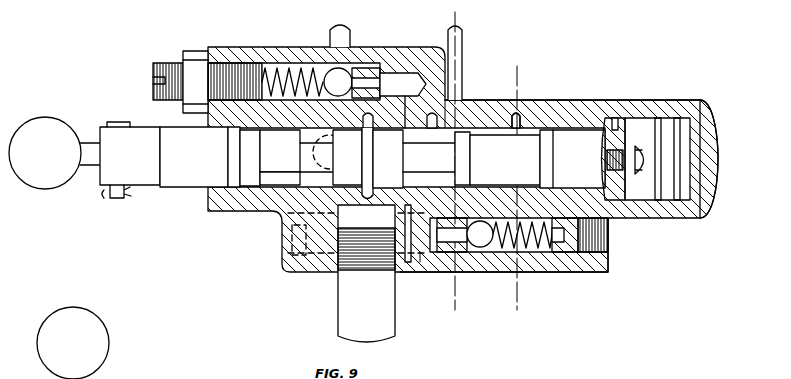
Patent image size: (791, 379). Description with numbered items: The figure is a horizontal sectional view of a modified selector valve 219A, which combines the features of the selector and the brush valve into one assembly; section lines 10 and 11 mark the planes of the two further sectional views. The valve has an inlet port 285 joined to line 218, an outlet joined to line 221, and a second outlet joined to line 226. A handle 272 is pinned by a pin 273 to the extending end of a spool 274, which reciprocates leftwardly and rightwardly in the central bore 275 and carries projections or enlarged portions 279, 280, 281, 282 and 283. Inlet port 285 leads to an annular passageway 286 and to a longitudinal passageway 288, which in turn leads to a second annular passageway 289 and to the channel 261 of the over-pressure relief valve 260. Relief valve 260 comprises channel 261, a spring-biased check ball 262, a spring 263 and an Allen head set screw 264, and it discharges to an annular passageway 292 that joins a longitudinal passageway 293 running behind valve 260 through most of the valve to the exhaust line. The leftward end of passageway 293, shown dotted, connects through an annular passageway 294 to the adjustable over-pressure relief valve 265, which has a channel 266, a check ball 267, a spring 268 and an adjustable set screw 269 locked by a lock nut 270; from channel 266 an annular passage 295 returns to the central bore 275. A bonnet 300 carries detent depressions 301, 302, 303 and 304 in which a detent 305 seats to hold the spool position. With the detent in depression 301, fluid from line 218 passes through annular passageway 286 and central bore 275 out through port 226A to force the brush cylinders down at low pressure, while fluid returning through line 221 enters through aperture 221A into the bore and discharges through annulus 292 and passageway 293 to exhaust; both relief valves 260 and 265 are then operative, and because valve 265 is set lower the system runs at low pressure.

The section line 10 is at (436, 300).
The section line 11 is at (497, 300).
The line 218 is at (338, 318).
The selector valve 219A is at (684, 98).
The line 221 is at (463, 40).
The aperture 221A is at (474, 127).
The line 226 is at (350, 38).
The port 226A is at (277, 214).
The over-pressure relief valve 260 is at (598, 272).
The channel 261 is at (442, 252).
The check ball 262 is at (480, 248).
The spring 263 is at (545, 253).
The Allen head set screw 264 is at (609, 240).
The adjustable over-pressure relief valve 265 is at (246, 62).
The channel 266 is at (372, 66).
The check ball 267 is at (331, 69).
The spring 268 is at (298, 67).
The adjustable set screw 269 is at (170, 62).
The lock nut 270 is at (198, 50).
The handle 272 is at (43, 192).
The pin 273 is at (117, 200).
The spool 274 is at (175, 190).
The bore 275 is at (300, 140).
The enlarged portion 279 is at (243, 153).
The enlarged portion 280 is at (337, 150).
The enlarged portion 281 is at (398, 162).
The enlarged portion 282 is at (463, 150).
The enlarged portion 283 is at (546, 156).
The inlet port 285 is at (368, 232).
The annular passageway 286 is at (367, 178).
The longitudinal passageway 288 is at (408, 263).
The annular passageway 289 is at (422, 255).
The passageway 292 is at (521, 127).
The longitudinal passageway 293 is at (304, 262).
The annular passageway 294 is at (299, 180).
The annular passage 295 is at (403, 100).
The bonnet 300 is at (712, 126).
The detent depression 301 is at (630, 205).
The detent depression 302 is at (650, 205).
The detent depression 303 is at (662, 205).
The detent depression 304 is at (690, 205).
The detent 305 is at (634, 120).